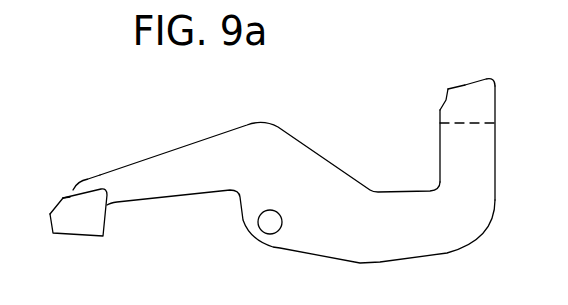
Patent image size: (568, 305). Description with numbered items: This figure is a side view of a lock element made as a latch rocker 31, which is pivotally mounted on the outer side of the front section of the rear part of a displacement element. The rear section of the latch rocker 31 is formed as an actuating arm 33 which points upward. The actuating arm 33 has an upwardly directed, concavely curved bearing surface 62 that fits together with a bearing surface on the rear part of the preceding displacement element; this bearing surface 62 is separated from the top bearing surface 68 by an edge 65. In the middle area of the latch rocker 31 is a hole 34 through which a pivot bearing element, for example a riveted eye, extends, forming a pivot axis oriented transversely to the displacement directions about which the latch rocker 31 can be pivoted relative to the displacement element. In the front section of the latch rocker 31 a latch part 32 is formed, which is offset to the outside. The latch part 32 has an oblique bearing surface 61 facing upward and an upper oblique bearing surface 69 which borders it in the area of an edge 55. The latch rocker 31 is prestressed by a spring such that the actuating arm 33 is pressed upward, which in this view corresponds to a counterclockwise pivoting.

The latch rocker 31 is at (316, 134).
The latch part 32 is at (78, 226).
The actuating arm 33 is at (480, 153).
The hole 34 is at (270, 226).
The edge 55 is at (64, 197).
The oblique bearing surface 61 is at (58, 204).
The bearing surface 62 is at (443, 98).
The edge 65 is at (446, 88).
The top bearing surface 68 is at (472, 81).
The upper oblique bearing surface 69 is at (87, 180).